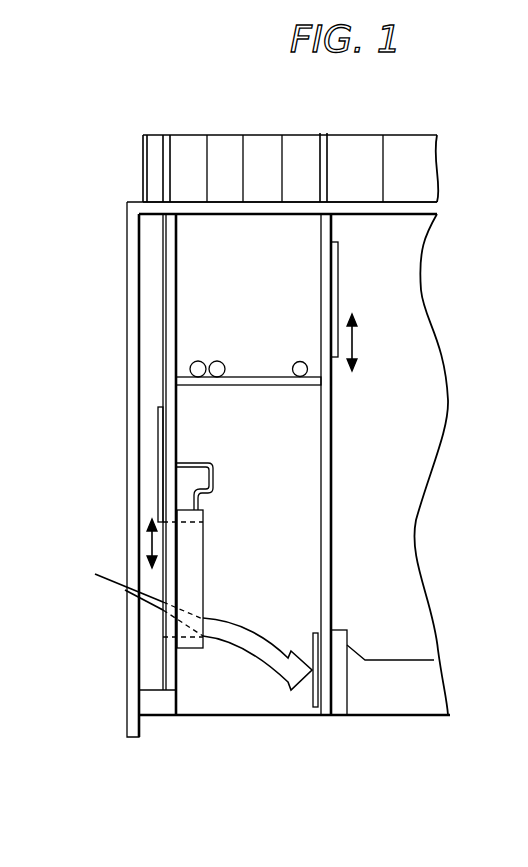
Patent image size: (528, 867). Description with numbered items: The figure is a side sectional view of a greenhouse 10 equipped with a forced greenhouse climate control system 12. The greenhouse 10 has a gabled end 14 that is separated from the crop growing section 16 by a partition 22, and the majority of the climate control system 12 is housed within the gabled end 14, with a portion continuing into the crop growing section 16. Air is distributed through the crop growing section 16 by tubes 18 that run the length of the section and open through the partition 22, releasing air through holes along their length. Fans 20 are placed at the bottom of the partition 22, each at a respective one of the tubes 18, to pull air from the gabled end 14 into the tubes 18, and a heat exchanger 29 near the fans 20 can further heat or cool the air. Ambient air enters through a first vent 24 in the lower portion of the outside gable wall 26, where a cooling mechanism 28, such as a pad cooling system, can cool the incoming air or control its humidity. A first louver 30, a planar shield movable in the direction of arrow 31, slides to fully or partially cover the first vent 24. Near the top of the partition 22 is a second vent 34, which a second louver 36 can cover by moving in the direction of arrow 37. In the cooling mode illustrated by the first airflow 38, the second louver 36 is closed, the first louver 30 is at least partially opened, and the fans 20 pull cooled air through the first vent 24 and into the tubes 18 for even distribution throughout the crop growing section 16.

The greenhouse 10 is at (174, 94).
The forced greenhouse climate control system 12 is at (198, 417).
The gabled end 14 is at (197, 238).
The crop growing section 16 is at (392, 600).
The tubes 18 is at (412, 700).
The fans 20 is at (312, 693).
The partition 22 is at (332, 448).
The first vent 24 is at (183, 628).
The outside gable wall 26 is at (164, 272).
The cooling mechanism 28 is at (192, 652).
The heat exchanger 29 is at (340, 700).
The first louver 30 is at (158, 436).
The arrow 31 is at (150, 547).
The second vent 34 is at (318, 298).
The second louver 36 is at (338, 265).
The arrow 37 is at (355, 340).
The first airflow 38 is at (112, 575).